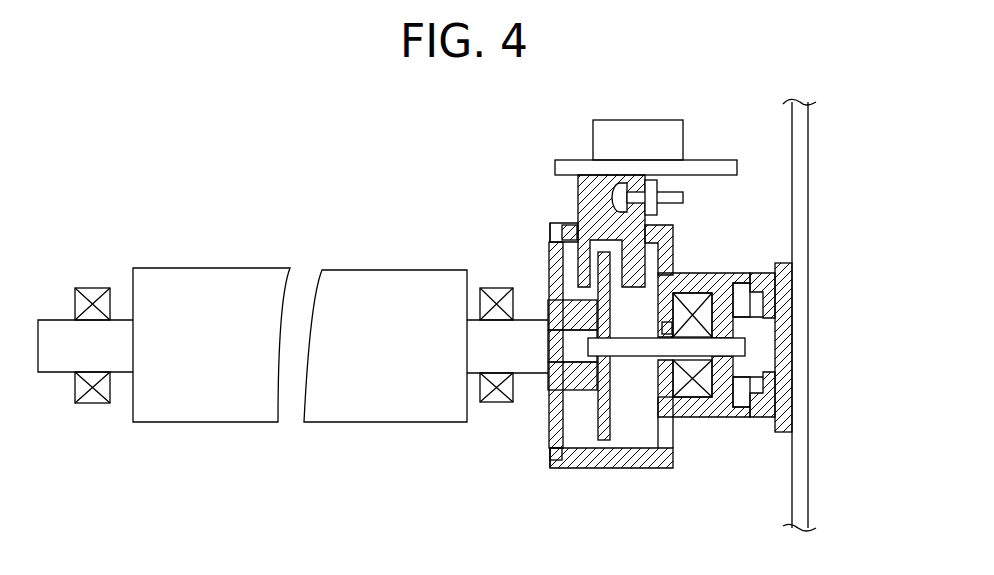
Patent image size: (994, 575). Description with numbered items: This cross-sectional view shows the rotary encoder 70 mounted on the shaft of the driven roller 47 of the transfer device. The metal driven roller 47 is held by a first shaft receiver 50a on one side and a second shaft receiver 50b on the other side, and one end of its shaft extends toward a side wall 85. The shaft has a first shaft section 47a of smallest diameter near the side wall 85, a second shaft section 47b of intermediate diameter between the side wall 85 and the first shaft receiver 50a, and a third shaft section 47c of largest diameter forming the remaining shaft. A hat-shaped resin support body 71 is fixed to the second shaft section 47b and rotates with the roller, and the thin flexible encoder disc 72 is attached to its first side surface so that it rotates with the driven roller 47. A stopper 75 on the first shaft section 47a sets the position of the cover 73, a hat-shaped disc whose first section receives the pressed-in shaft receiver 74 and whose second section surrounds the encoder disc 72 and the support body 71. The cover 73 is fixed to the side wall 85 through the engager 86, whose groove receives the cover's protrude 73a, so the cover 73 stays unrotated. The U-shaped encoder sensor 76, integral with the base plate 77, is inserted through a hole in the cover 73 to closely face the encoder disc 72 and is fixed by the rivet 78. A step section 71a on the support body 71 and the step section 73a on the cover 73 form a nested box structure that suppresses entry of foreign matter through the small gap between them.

The driven roller 47 is at (392, 268).
The first shaft section 47a is at (746, 347).
The second shaft section 47b is at (580, 362).
The third shaft section 47c is at (530, 330).
The first shaft receiver 50a is at (497, 403).
The second shaft receiver 50b is at (93, 404).
The rotary encoder 70 is at (679, 104).
The support body 71 is at (550, 402).
The step section 71a is at (542, 238).
The encoder disc 72 is at (608, 415).
The cover 73 is at (662, 470).
The protrude 73a is at (553, 232).
The shaft receiver 74 is at (697, 418).
The stopper 75 is at (664, 322).
The encoder sensor 76 is at (577, 192).
The base plate 77 is at (580, 160).
The rivet 78 is at (620, 183).
The side wall 85 is at (808, 178).
The engager 86 is at (792, 310).